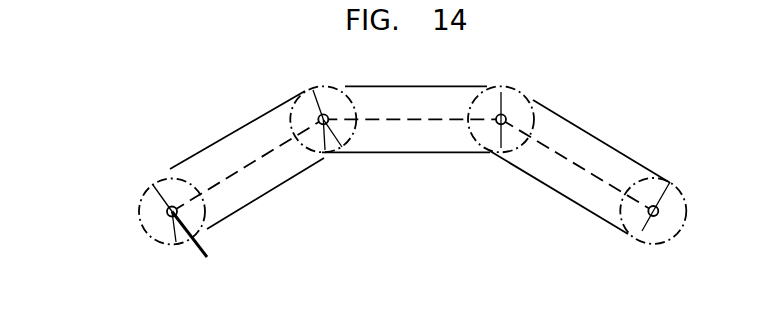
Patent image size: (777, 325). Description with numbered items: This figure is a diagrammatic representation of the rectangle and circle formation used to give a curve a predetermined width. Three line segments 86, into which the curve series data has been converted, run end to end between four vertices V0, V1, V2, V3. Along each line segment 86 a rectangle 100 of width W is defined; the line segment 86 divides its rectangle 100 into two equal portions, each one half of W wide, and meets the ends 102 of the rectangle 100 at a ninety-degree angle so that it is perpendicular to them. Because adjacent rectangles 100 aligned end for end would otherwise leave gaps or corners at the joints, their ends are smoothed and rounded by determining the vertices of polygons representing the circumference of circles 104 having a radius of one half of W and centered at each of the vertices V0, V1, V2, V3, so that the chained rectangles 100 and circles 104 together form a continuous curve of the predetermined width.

The line segment 86 is at (247, 167).
The rectangle 100 is at (202, 152).
The end of rectangle 102 is at (176, 240).
The circle 104 is at (207, 257).
The vertex V0 is at (147, 208).
The vertex V1 is at (326, 116).
The vertex V2 is at (505, 117).
The vertex V3 is at (657, 208).